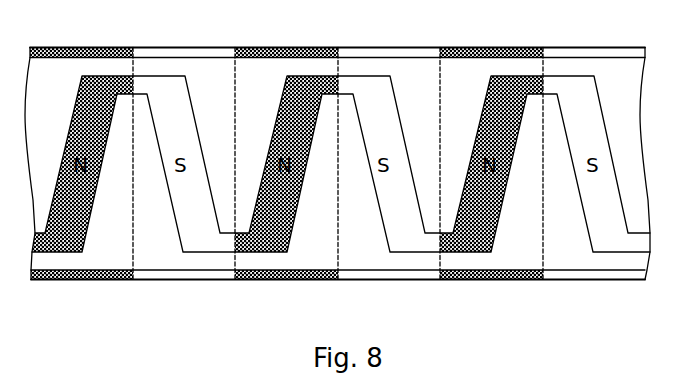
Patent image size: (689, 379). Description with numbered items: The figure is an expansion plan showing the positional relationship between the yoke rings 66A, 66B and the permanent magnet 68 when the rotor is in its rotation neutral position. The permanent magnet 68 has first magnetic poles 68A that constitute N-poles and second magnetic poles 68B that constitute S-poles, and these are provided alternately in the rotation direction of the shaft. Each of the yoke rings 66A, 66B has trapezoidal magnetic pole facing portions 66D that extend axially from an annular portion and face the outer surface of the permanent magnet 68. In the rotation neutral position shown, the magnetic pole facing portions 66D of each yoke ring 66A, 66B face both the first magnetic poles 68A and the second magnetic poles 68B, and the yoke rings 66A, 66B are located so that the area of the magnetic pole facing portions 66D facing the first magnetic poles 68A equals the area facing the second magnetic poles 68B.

The permanent magnet 68 is at (198, 47).
The yoke ring 66A is at (307, 62).
The yoke ring 66B is at (270, 260).
The magnetic pole facing portion 66D is at (140, 107).
The first magnetic pole 68A is at (78, 280).
The second magnetic pole 68B is at (152, 278).